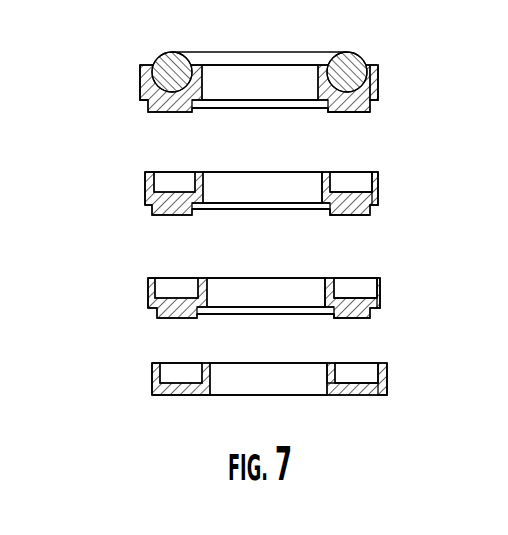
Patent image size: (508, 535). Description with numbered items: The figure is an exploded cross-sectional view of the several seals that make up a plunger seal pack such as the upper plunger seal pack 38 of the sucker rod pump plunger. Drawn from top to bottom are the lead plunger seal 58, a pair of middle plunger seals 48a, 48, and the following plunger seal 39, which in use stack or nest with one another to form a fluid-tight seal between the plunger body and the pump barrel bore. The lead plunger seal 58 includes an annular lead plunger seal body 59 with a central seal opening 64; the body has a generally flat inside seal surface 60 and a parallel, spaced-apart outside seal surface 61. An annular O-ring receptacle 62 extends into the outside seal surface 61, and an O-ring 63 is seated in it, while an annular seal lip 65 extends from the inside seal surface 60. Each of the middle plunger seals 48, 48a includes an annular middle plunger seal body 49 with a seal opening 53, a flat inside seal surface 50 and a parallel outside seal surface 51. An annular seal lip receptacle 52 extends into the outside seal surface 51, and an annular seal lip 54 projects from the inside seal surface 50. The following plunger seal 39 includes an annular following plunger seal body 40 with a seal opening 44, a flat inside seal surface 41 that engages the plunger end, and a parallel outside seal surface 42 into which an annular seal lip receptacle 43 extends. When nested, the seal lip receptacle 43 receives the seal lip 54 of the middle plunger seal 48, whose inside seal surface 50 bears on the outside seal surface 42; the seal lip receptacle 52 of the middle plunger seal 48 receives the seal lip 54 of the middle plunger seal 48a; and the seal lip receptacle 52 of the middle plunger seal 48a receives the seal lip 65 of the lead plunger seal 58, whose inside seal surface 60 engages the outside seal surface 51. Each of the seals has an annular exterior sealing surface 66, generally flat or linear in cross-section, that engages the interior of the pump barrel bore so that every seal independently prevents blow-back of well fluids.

The upper plunger seal pack 38 is at (226, 72).
The lead plunger seal 58 is at (120, 70).
The lead plunger seal body 59 is at (130, 89).
The inside seal surface 60 is at (296, 108).
The outside seal surface 61 is at (145, 64).
The O-ring receptacle 62 is at (360, 60).
The O-ring 63 is at (345, 56).
The seal opening 64 is at (318, 88).
The seal lip 65 is at (362, 112).
The exterior sealing surface 66 is at (380, 78).
The middle plunger seal 48a is at (125, 165).
The middle plunger seal 48 is at (130, 268).
The middle plunger seal body 49 is at (131, 186).
The inside seal surface 50 is at (287, 209).
The outside seal surface 51 is at (147, 172).
The seal lip receptacle 52 is at (368, 190).
The seal opening 53 is at (322, 186).
The seal lip 54 is at (360, 217).
The following plunger seal 39 is at (128, 373).
The following plunger seal body 40 is at (139, 388).
The inside seal surface 41 is at (174, 396).
The outside seal surface 42 is at (160, 363).
The seal lip receptacle 43 is at (366, 366).
The seal opening 44 is at (329, 372).